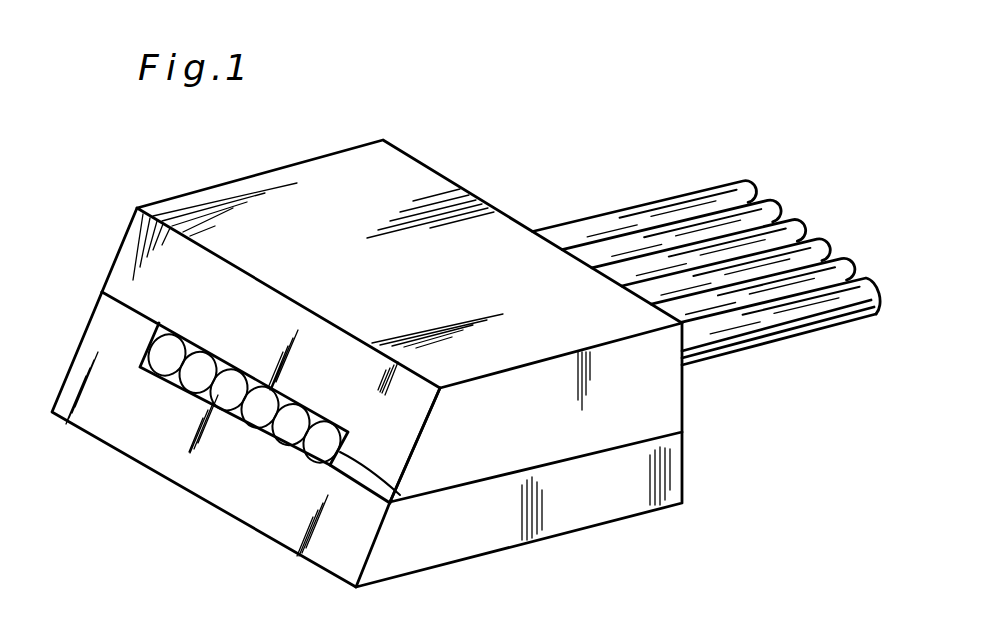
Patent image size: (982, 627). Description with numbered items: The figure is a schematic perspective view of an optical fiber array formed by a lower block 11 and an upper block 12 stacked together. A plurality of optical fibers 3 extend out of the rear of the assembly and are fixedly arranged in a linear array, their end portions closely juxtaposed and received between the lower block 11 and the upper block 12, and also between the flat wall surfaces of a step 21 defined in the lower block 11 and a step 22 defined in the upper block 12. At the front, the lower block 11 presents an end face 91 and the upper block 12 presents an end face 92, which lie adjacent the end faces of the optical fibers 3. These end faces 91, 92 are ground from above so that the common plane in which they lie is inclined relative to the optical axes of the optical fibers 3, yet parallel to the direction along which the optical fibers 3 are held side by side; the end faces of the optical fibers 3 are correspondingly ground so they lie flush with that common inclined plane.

The upper block 12 is at (400, 168).
The end face of upper block 92 is at (143, 264).
The lower block 11 is at (615, 507).
The end face of lower block 91 is at (150, 433).
The step 21 is at (157, 349).
The step 22 is at (400, 494).
The optical fibers 3 is at (665, 208).